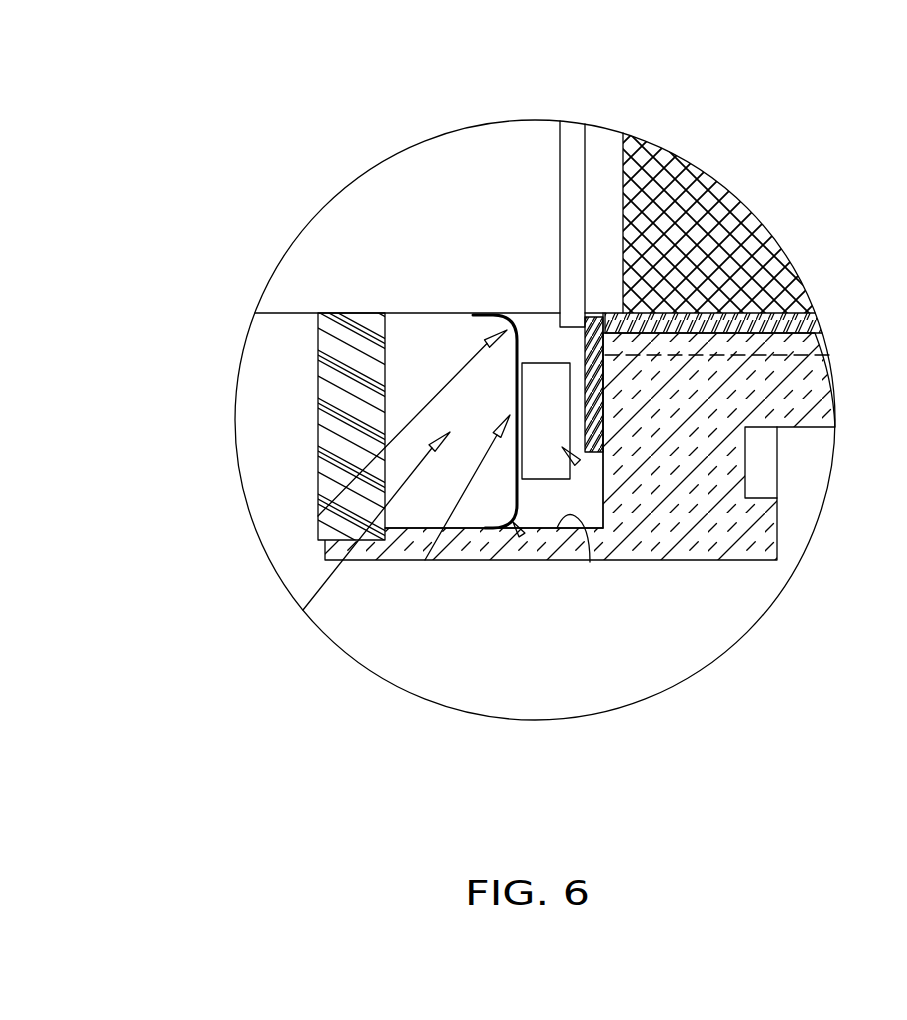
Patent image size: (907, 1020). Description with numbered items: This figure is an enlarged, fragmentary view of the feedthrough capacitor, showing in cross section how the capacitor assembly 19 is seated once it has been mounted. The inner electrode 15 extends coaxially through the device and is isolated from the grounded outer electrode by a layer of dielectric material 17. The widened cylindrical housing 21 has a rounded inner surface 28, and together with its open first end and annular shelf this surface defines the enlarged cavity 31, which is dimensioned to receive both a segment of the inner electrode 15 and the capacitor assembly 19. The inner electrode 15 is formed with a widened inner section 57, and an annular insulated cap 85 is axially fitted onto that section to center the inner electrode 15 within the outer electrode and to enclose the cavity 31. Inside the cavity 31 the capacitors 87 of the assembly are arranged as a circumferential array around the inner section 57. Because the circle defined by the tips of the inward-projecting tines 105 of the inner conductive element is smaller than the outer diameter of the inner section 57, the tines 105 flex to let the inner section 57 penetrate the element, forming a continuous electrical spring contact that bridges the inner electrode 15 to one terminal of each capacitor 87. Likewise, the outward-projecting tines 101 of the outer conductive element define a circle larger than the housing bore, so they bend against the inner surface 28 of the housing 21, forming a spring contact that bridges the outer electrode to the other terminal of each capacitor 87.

The inner electrode 15 is at (531, 133).
The dielectric material 17 is at (761, 298).
The capacitor assembly 19 is at (425, 560).
The cylindrical housing 21 is at (819, 387).
The rounded inner surface 28 is at (590, 562).
The enlarged cavity 31 is at (303, 610).
The widened inner section 57 is at (465, 187).
The annular insulated cap 85 is at (318, 383).
The capacitor 87 is at (578, 463).
The flexible fingers, or tines 101 is at (522, 535).
The flexible fingers, or tines 105 is at (318, 516).